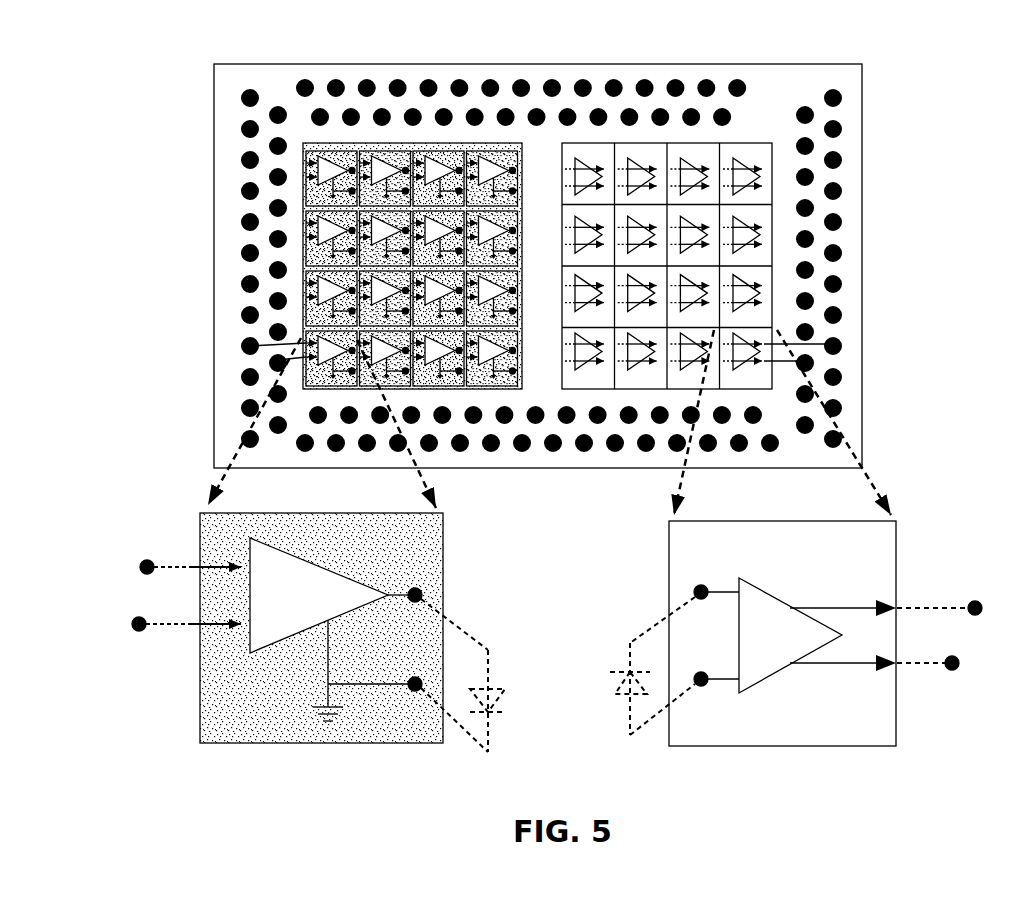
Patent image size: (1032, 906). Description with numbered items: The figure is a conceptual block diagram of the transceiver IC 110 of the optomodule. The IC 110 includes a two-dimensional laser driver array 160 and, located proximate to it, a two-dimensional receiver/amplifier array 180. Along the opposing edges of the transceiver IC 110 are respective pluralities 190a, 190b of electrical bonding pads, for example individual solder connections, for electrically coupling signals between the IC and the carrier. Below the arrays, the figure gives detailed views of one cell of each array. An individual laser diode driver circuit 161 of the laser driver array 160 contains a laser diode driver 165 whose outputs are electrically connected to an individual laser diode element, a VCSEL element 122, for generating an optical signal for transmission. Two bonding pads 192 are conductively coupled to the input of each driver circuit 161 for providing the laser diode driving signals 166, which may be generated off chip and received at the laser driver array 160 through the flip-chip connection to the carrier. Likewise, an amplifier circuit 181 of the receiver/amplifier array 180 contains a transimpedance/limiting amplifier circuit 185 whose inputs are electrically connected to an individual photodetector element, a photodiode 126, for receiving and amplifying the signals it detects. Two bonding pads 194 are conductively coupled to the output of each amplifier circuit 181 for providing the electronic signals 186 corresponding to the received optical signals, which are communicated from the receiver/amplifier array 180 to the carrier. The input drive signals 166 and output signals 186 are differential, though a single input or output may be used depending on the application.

The transceiver IC 110 is at (862, 165).
The laser driver array 160 is at (300, 146).
The receiver/amplifier array 180 is at (780, 141).
The plurality of electrical bonding pads 190a is at (206, 120).
The plurality of electrical bonding pads 190b is at (867, 120).
The bonding pads 192 is at (238, 330).
The bonding pads 194 is at (842, 330).
The laser diode driver circuit 161 is at (255, 618).
The laser diode driver 165 is at (262, 633).
The laser diode driving signals 166 is at (176, 598).
The VCSEL element 122 is at (500, 690).
The amplifier circuit 181 is at (849, 625).
The transimpedance/limiting amplifier circuit 185 is at (795, 668).
The electronic signals 186 is at (870, 635).
The photodiode 126 is at (620, 690).